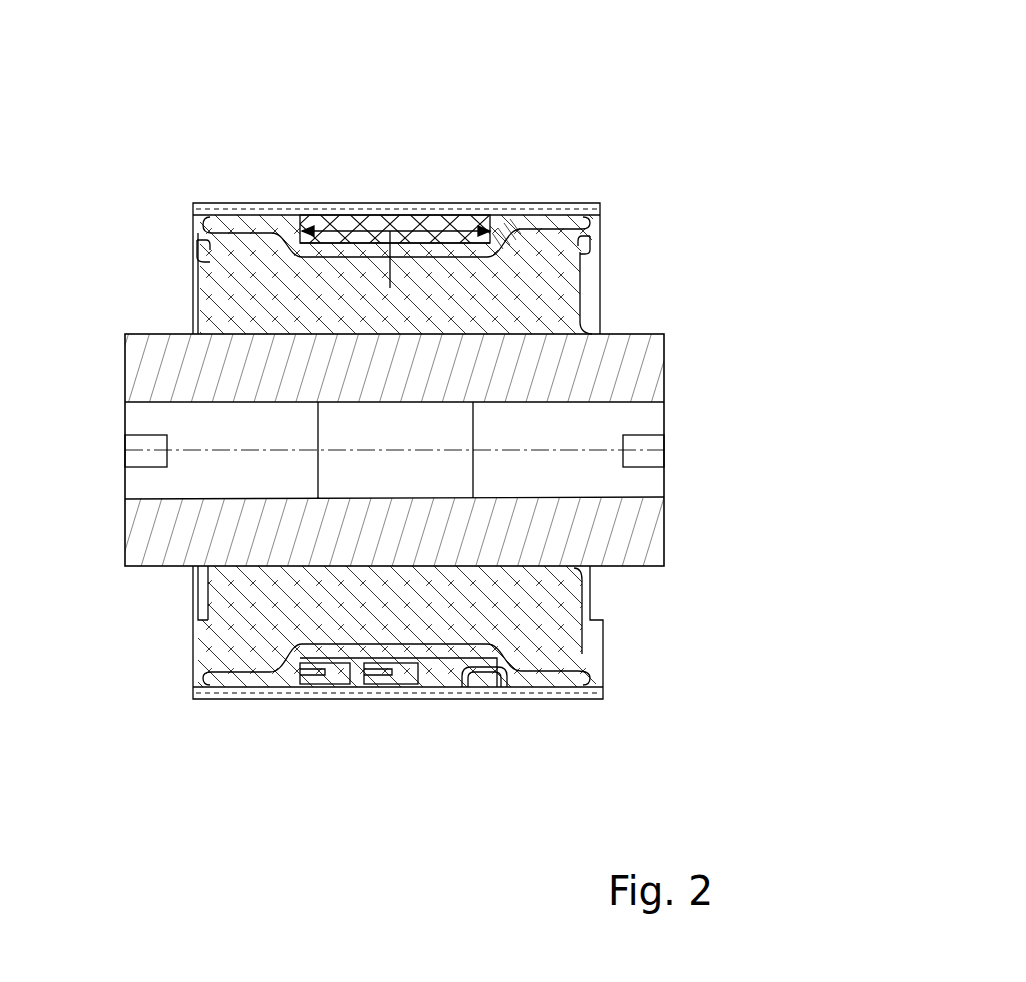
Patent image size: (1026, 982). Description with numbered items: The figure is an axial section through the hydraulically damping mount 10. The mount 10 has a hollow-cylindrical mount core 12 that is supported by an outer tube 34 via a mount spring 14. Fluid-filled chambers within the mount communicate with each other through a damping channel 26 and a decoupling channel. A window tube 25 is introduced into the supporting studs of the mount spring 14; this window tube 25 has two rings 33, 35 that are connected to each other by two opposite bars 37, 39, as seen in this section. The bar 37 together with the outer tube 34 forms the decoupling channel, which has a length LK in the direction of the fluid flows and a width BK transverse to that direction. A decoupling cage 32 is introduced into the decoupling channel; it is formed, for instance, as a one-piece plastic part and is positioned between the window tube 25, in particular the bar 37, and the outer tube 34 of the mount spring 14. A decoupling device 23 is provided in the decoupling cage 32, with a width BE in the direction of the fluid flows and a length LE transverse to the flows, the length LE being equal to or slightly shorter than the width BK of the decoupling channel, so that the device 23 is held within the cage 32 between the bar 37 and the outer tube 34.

The mount 10 is at (417, 410).
The mount core 12 is at (664, 527).
The mount spring 14 is at (582, 290).
The decoupling device 23 is at (372, 222).
The window tube 25 is at (513, 210).
The damping channel 26 is at (483, 680).
The decoupling cage 32 is at (432, 218).
The ring 33 is at (230, 220).
The outer tube 34 is at (255, 207).
The ring 35 is at (540, 220).
The bar 37 is at (277, 220).
The bar 39 is at (355, 650).